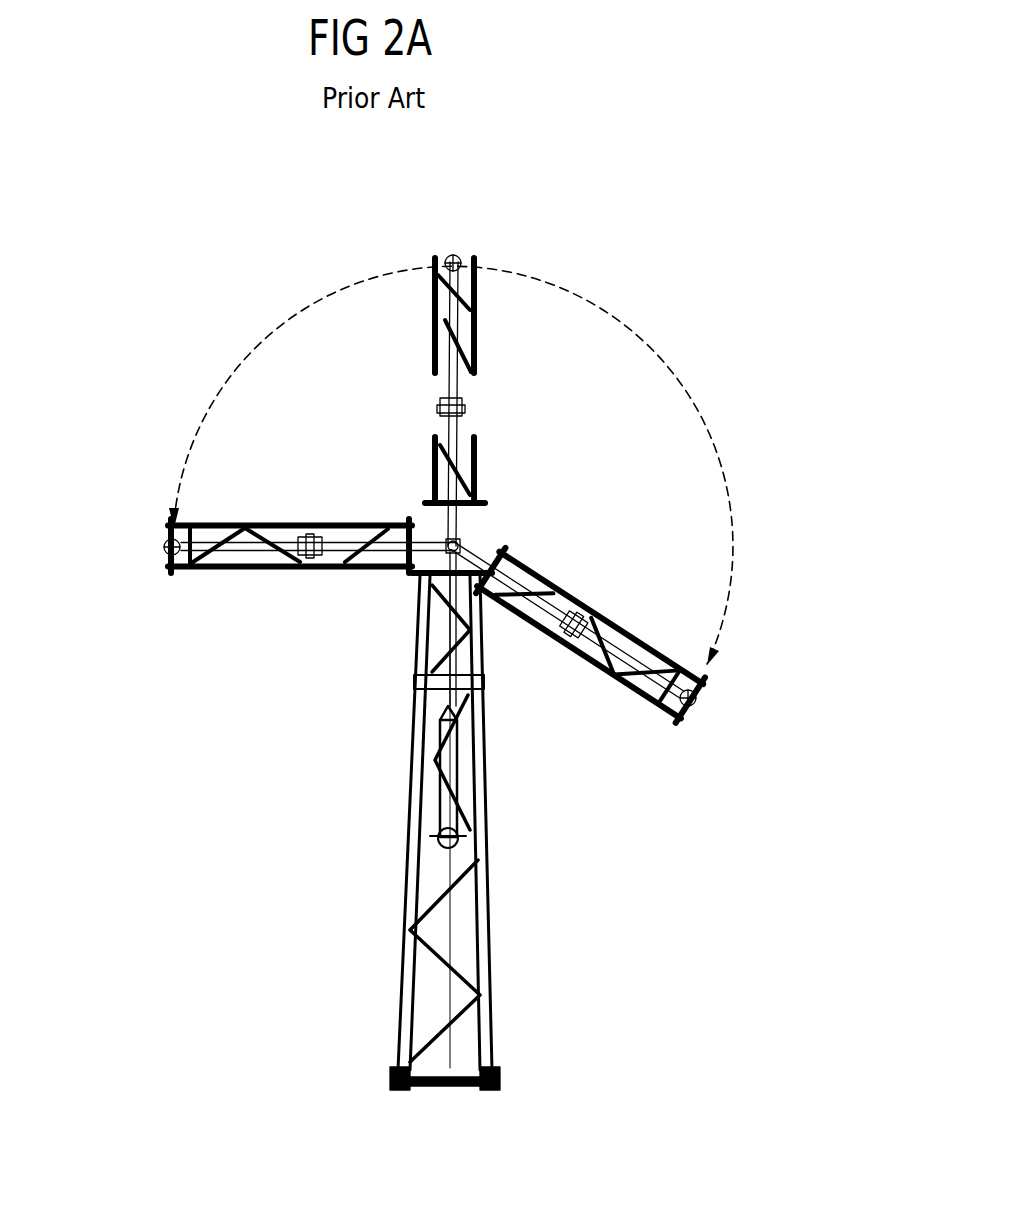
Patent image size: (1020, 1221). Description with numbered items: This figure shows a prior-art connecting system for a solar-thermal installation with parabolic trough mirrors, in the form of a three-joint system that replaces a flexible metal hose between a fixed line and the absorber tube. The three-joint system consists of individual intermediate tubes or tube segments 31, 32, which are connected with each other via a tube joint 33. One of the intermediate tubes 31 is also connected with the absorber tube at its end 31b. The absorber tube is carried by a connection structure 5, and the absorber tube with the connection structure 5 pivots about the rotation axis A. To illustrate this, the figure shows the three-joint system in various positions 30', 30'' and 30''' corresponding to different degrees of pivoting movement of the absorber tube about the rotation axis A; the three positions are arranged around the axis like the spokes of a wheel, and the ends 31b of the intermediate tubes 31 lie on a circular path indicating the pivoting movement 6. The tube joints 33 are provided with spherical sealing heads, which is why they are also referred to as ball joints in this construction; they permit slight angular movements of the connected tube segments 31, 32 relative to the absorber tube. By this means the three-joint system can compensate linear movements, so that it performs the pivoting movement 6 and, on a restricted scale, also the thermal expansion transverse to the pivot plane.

The connection structure 5 is at (258, 570).
The pivoting movement 6 is at (732, 562).
The first position of the three-joint system 30' is at (268, 586).
The second position of the three-joint system 30'' is at (506, 402).
The third position of the three-joint system 30''' is at (572, 671).
The intermediate tube 31 is at (233, 522).
The end of intermediate tube 31b is at (165, 542).
The intermediate tube 32 is at (345, 560).
The tube joint 33 is at (307, 568).
The rotation axis A is at (462, 549).